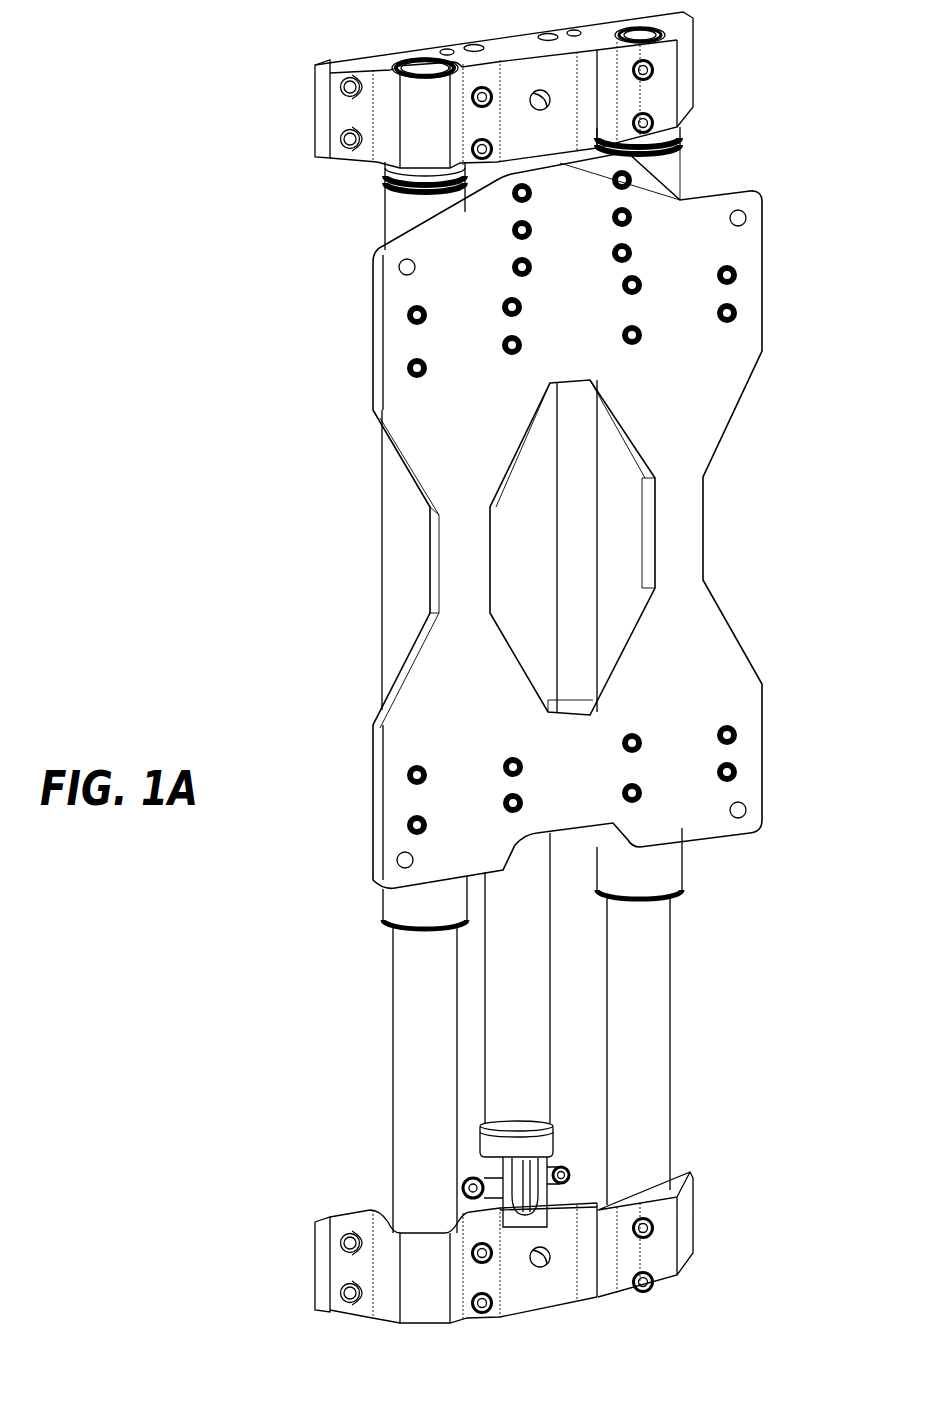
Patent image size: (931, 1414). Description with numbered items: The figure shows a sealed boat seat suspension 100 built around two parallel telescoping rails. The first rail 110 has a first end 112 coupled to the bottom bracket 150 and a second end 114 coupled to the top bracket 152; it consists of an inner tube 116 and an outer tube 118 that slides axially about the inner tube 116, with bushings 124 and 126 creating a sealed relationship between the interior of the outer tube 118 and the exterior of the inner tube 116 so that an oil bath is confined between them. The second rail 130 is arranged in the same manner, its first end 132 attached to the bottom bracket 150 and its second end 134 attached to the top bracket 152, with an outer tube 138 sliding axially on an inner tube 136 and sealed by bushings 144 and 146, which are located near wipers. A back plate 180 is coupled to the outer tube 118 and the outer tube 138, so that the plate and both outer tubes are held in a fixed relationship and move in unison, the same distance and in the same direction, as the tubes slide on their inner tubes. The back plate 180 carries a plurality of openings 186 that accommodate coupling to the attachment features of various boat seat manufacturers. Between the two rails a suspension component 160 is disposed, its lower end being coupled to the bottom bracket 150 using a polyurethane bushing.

The sealed boat seat suspension 100 is at (262, 30).
The top bracket 152 is at (700, 0).
The bottom bracket 150 is at (327, 1348).
The first rail 110 is at (258, 1200).
The second rail 130 is at (832, 1200).
The second end 114 is at (323, 180).
The first end 112 is at (323, 1125).
The second end 134 is at (770, 130).
The first end 132 is at (697, 1097).
The bushing 126 is at (392, 198).
The inner tube 116 is at (413, 1068).
The outer tube 118 is at (395, 898).
The bushing 124 is at (415, 930).
The bushing 146 is at (672, 140).
The inner tube 136 is at (657, 1055).
The outer tube 138 is at (667, 857).
The bushing 144 is at (653, 900).
The suspension component 160 is at (525, 977).
The back plate 180 is at (712, 408).
The openings 186 is at (612, 255).